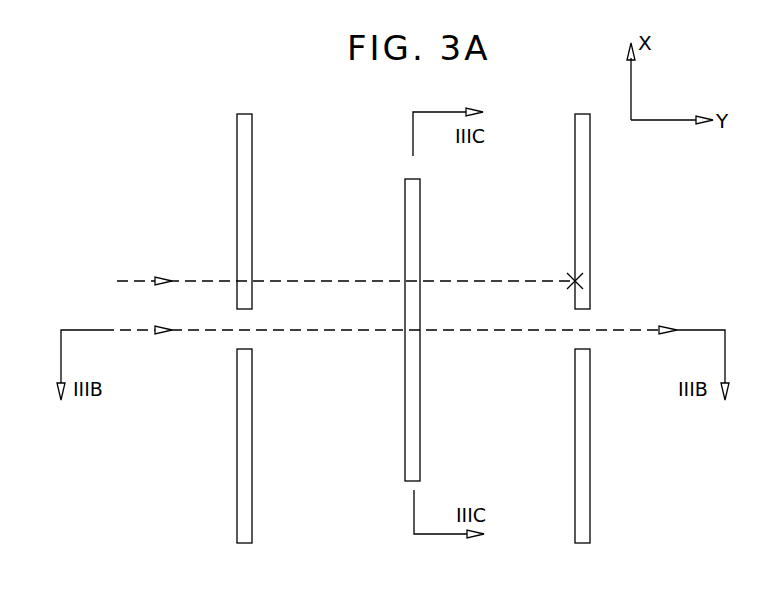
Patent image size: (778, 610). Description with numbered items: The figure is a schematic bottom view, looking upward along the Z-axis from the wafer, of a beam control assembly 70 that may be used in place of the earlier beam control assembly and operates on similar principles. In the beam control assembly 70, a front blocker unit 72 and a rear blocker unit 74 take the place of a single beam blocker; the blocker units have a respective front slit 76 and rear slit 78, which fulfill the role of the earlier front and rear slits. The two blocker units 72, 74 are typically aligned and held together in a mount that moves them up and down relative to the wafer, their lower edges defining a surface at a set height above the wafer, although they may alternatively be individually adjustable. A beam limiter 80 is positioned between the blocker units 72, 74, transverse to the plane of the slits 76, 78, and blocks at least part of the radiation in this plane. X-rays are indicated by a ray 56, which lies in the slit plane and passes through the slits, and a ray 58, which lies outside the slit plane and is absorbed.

The ray 56 is at (193, 332).
The ray 58 is at (193, 280).
The beam control assembly 70 is at (228, 298).
The front blocker unit 72 is at (252, 202).
The rear blocker unit 74 is at (590, 229).
The front slit 76 is at (246, 318).
The rear slit 78 is at (580, 317).
The beam limiter 80 is at (420, 402).